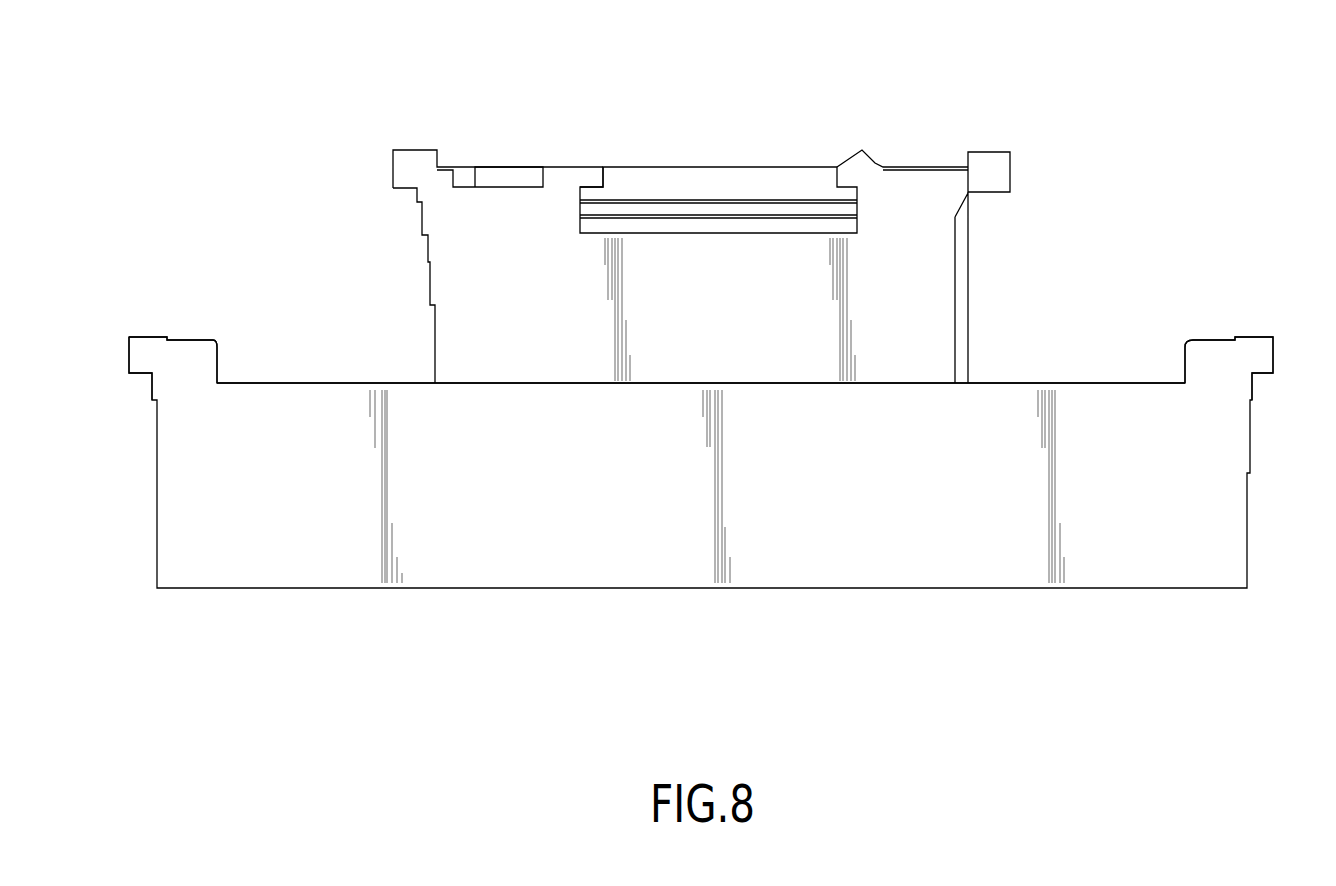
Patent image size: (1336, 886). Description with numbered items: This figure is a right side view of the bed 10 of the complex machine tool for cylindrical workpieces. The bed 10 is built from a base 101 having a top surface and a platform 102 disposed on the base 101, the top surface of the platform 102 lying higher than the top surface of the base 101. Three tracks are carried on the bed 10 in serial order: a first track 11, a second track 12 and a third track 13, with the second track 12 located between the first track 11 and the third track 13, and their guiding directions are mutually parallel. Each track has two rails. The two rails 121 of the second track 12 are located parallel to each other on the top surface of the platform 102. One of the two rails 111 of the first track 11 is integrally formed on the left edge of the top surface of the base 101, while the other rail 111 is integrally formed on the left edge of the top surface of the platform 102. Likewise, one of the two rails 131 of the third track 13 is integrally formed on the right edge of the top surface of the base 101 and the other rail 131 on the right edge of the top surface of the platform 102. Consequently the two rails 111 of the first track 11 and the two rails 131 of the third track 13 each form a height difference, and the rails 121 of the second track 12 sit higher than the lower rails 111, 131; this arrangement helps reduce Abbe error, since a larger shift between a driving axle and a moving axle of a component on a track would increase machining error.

The bed 10 is at (701, 522).
The base 101 is at (288, 553).
The platform 102 is at (533, 352).
The first track 11 is at (349, 251).
The rails of the first track 111 is at (408, 168).
The second track 12 is at (774, 196).
The rails of the second track 121 is at (827, 67).
The third track 13 is at (1131, 251).
The rails of the third track 131 is at (1307, 243).